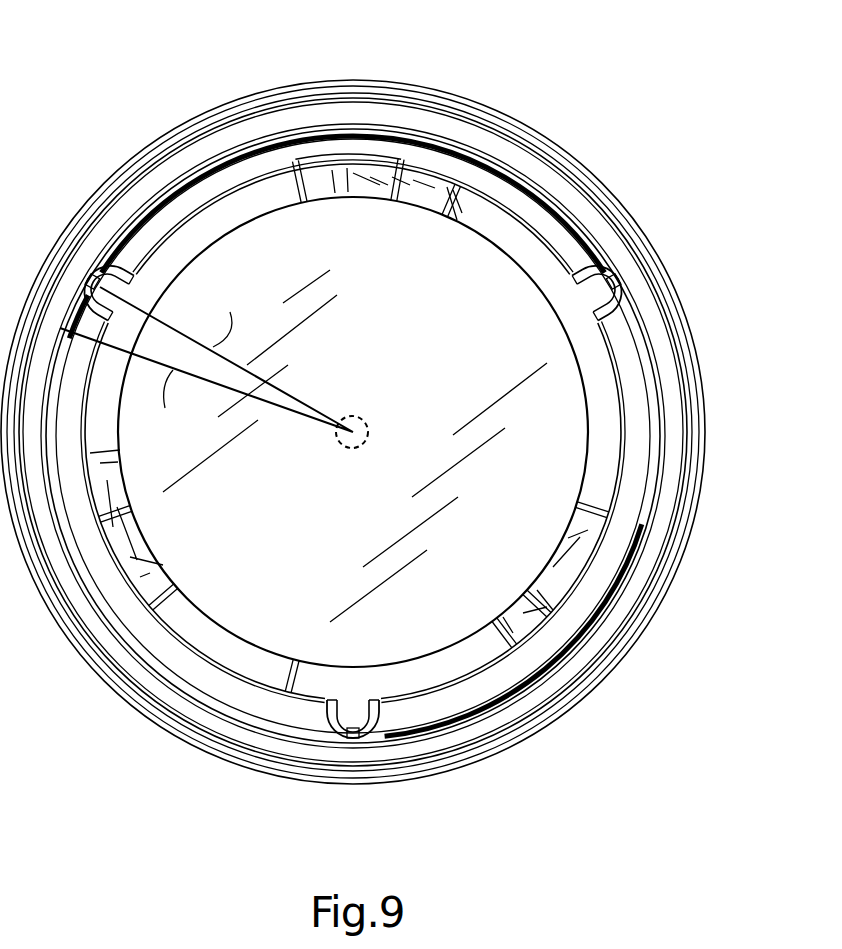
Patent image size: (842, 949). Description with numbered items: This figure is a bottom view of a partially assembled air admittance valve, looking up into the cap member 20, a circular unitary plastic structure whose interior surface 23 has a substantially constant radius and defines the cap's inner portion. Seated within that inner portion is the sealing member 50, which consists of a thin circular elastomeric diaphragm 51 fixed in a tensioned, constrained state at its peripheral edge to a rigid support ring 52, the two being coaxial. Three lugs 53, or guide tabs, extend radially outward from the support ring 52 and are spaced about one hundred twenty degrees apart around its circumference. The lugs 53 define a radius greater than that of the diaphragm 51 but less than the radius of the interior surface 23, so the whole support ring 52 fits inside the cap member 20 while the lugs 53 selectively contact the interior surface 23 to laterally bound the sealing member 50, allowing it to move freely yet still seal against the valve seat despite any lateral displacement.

The cap member 20 is at (562, 90).
The interior surface 23 is at (608, 587).
The sealing member 50 is at (545, 228).
The diaphragm 51 is at (505, 488).
The support ring 52 is at (466, 672).
The lugs 53 is at (100, 282).